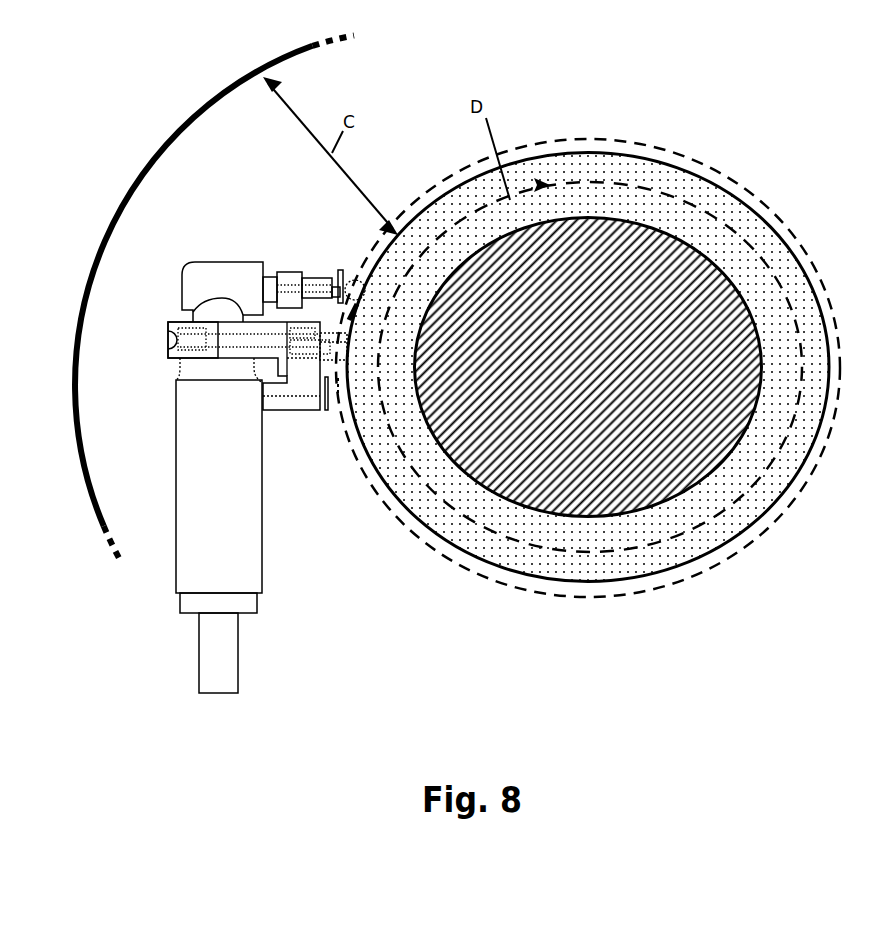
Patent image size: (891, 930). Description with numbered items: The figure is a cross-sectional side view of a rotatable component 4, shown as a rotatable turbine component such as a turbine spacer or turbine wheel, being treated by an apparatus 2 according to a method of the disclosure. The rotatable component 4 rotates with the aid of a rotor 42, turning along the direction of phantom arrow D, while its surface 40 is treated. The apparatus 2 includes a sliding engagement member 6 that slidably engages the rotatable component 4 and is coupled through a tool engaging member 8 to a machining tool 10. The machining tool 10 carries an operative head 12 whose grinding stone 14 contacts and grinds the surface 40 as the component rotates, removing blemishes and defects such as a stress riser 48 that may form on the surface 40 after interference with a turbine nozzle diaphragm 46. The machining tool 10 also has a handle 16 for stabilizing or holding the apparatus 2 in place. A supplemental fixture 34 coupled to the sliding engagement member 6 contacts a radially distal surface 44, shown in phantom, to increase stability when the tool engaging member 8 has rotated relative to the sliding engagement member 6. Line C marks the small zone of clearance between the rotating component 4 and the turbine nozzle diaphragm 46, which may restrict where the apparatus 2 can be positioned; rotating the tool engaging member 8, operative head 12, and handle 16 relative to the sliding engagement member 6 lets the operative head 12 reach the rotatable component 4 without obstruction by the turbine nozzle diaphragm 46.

The apparatus 2 is at (234, 444).
The rotatable component 4 is at (680, 525).
The sliding engagement member 6 is at (303, 397).
The tool engaging member 8 is at (166, 333).
The machining tool 10 is at (205, 272).
The operative head 12 is at (325, 278).
The grinding stone 14 is at (355, 283).
The handle 16 is at (190, 580).
The supplemental fixture 34 is at (332, 388).
The surface 40 is at (413, 517).
The rotor 42 is at (745, 405).
The radially distal surface 44 is at (700, 163).
The turbine nozzle diaphragm 46 is at (172, 135).
The stress riser 48 is at (350, 307).